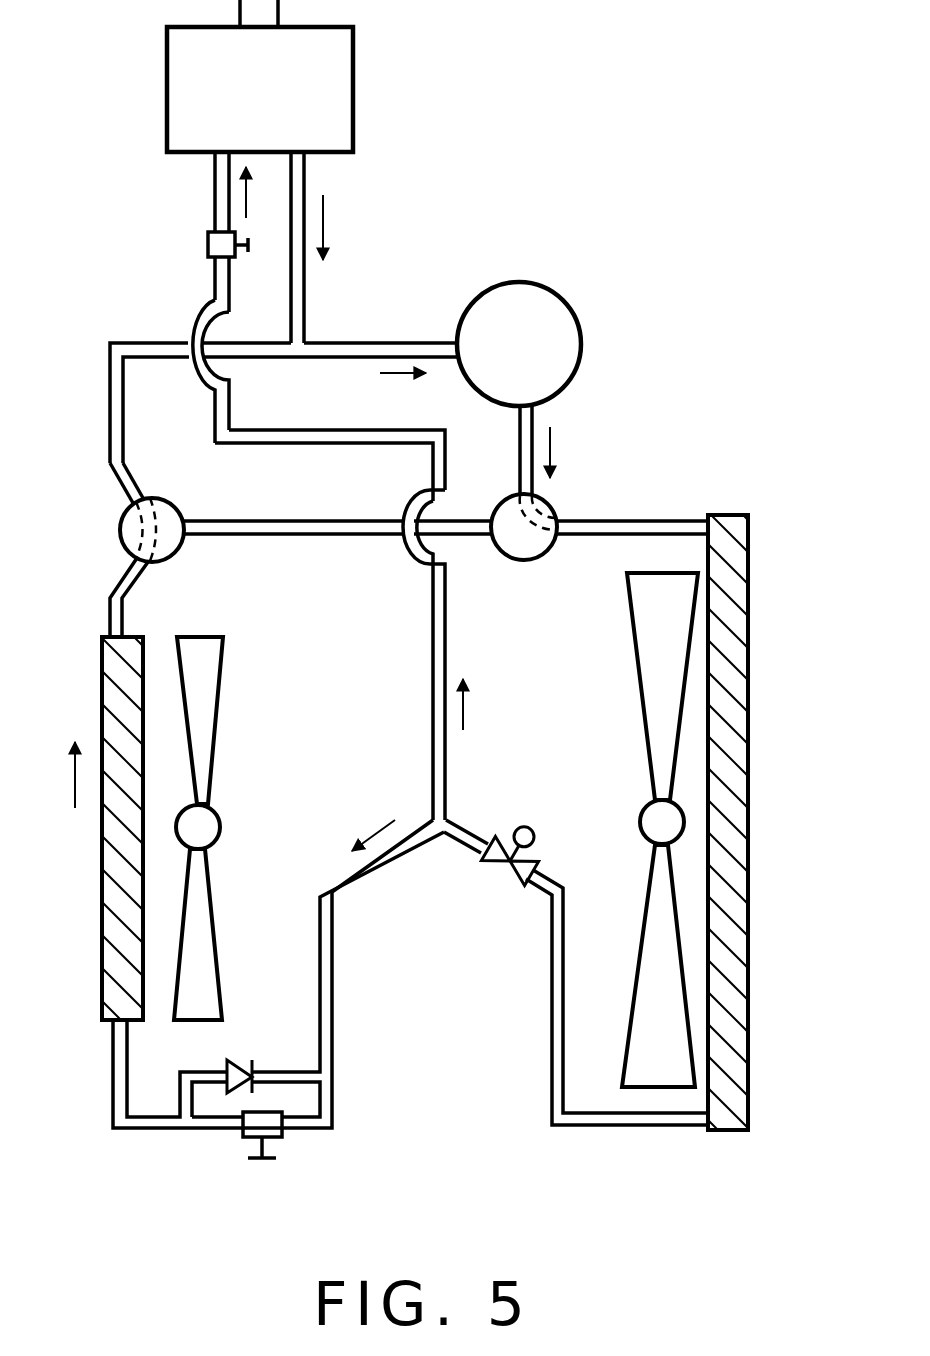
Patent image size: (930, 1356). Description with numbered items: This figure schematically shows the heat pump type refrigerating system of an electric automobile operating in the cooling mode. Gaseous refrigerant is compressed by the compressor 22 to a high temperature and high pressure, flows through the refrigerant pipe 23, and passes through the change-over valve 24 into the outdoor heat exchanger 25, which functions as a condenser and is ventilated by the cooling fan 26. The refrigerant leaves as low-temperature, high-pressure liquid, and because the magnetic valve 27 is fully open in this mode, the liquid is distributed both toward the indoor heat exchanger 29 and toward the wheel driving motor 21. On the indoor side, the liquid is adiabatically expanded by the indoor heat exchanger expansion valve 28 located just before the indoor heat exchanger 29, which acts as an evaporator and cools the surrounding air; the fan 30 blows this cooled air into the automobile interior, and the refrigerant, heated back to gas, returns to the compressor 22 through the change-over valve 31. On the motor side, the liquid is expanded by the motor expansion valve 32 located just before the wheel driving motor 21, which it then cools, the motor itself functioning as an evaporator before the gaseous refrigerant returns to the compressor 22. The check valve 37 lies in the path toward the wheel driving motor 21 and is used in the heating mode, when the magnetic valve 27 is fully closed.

The wheel driving motor 21 is at (353, 95).
The compressor 22 is at (570, 306).
The refrigerant pipe 23 is at (516, 460).
The change-over valve 24 is at (553, 505).
The outdoor heat exchanger 25 is at (748, 632).
The cooling fan 26 is at (652, 707).
The magnetic valve 27 is at (497, 870).
The indoor heat exchanger expansion valve 28 is at (277, 1133).
The indoor heat exchanger 29 is at (118, 888).
The fan 30 is at (208, 705).
The change-over valve 31 is at (119, 537).
The motor expansion valve 32 is at (208, 245).
The check valve 37 is at (232, 1058).